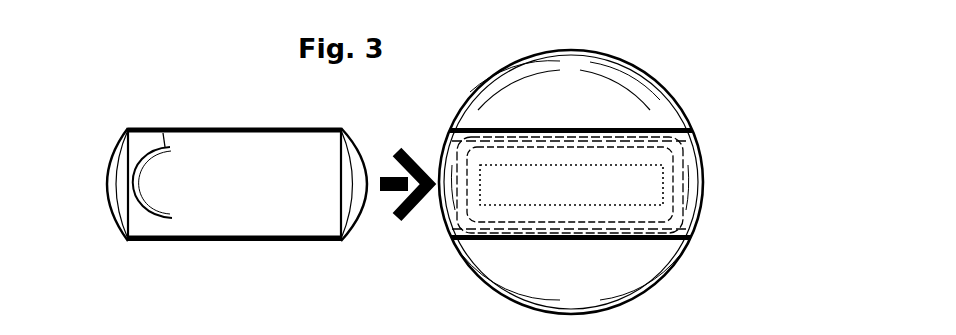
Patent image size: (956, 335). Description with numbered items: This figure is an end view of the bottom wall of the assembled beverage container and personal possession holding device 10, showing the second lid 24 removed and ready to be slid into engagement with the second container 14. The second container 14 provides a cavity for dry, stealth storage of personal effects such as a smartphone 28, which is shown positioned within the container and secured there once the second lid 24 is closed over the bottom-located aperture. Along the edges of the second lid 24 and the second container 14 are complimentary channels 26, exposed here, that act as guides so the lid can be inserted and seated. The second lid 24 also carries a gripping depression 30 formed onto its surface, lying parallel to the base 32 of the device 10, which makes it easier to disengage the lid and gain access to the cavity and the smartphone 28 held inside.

The beverage container and personal possession holding device 10 is at (706, 238).
The second container 14 is at (676, 176).
The second lid 24 is at (252, 207).
The complimentary channels 26 is at (136, 128).
The smartphone 28 is at (480, 165).
The gripping depression 30 is at (172, 128).
The base 32 is at (602, 93).